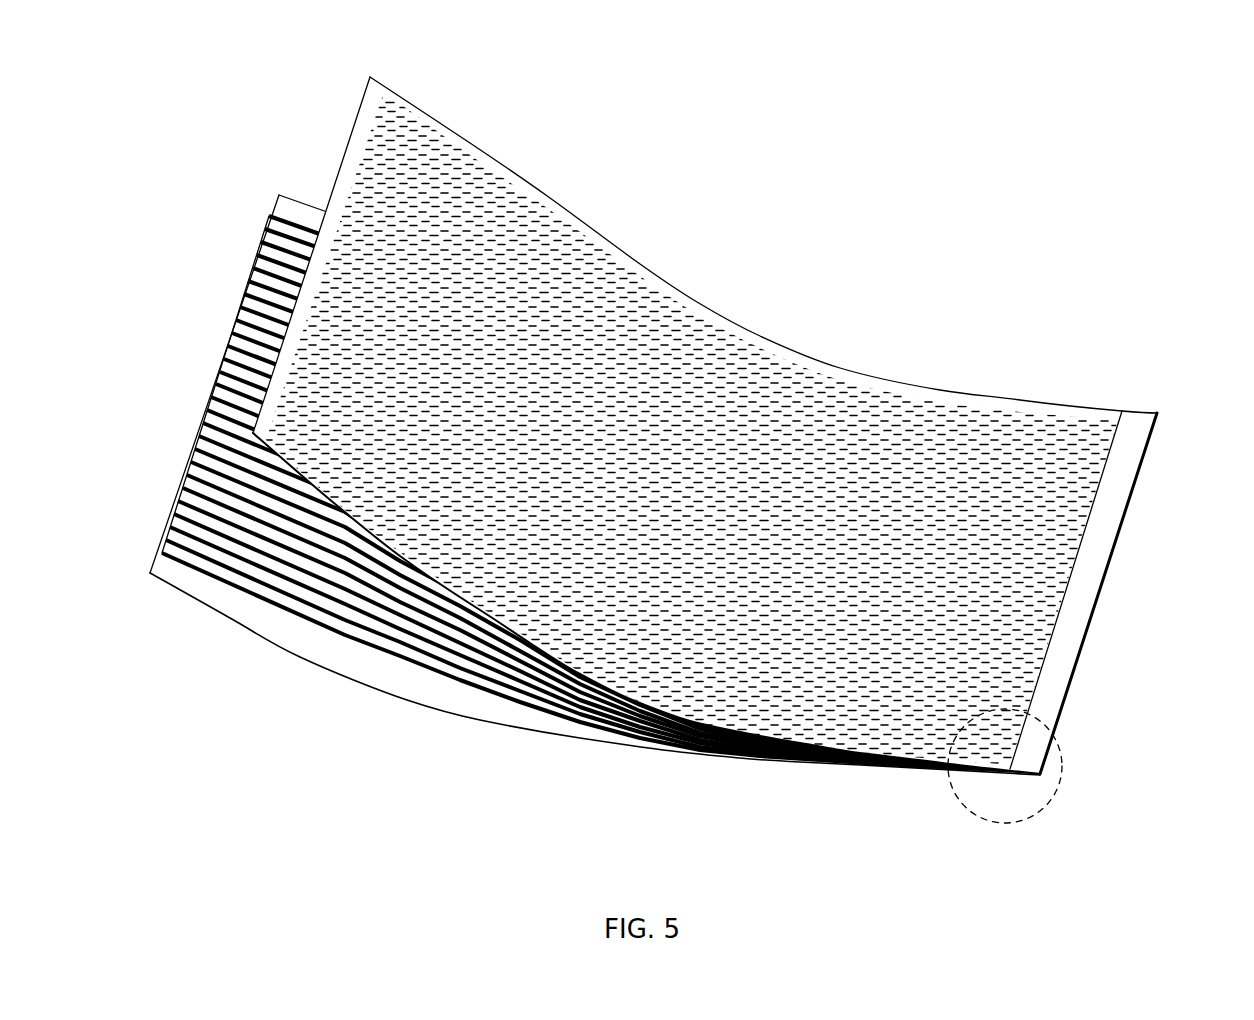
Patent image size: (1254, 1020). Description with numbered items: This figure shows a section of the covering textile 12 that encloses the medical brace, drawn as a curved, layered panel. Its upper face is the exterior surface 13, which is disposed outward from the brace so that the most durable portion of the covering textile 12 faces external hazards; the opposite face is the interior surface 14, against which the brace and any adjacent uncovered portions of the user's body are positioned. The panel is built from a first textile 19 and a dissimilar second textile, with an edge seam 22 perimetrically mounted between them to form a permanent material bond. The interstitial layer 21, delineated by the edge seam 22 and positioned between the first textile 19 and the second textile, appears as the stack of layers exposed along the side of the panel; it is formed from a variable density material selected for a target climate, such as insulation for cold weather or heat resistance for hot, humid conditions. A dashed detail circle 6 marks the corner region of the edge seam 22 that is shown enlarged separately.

The covering textile 12 is at (735, 431).
The exterior surface 13 is at (744, 318).
The interior surface 14 is at (731, 770).
The first textile 19 is at (369, 78).
The interstitial layer 21 is at (278, 195).
The edge seam 22 is at (1092, 565).
The detail region of FIG. 6 is at (1053, 795).